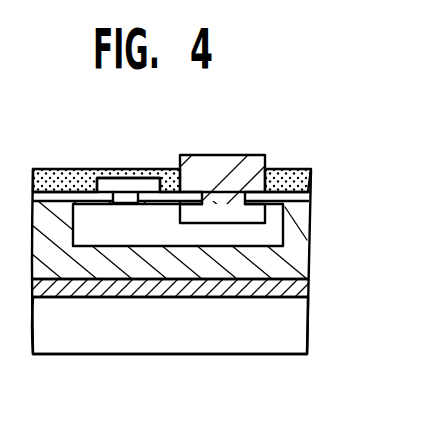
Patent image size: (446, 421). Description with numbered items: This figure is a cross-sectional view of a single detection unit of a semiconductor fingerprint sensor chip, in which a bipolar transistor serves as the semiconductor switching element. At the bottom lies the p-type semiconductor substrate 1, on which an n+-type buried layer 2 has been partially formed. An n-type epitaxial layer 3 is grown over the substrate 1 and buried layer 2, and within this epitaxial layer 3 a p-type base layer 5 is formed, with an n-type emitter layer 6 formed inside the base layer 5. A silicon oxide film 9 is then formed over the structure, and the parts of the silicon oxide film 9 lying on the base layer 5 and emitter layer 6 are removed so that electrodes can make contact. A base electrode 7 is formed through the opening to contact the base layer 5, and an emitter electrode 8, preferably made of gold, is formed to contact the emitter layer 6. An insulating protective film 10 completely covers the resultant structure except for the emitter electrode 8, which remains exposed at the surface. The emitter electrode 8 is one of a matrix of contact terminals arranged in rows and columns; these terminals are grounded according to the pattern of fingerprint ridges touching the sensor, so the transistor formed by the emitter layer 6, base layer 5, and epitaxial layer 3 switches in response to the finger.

The p-type semiconductor substrate 1 is at (170, 325).
The n+-type buried layer 2 is at (303, 289).
The n-type epitaxial layer 3 is at (280, 263).
The p-type base layer 5 is at (273, 228).
The n-type emitter layer 6 is at (215, 212).
The base electrode 7 is at (120, 178).
The emitter electrode 8 is at (232, 163).
The silicon oxide film 9 is at (293, 198).
The insulating protective film 10 is at (292, 168).